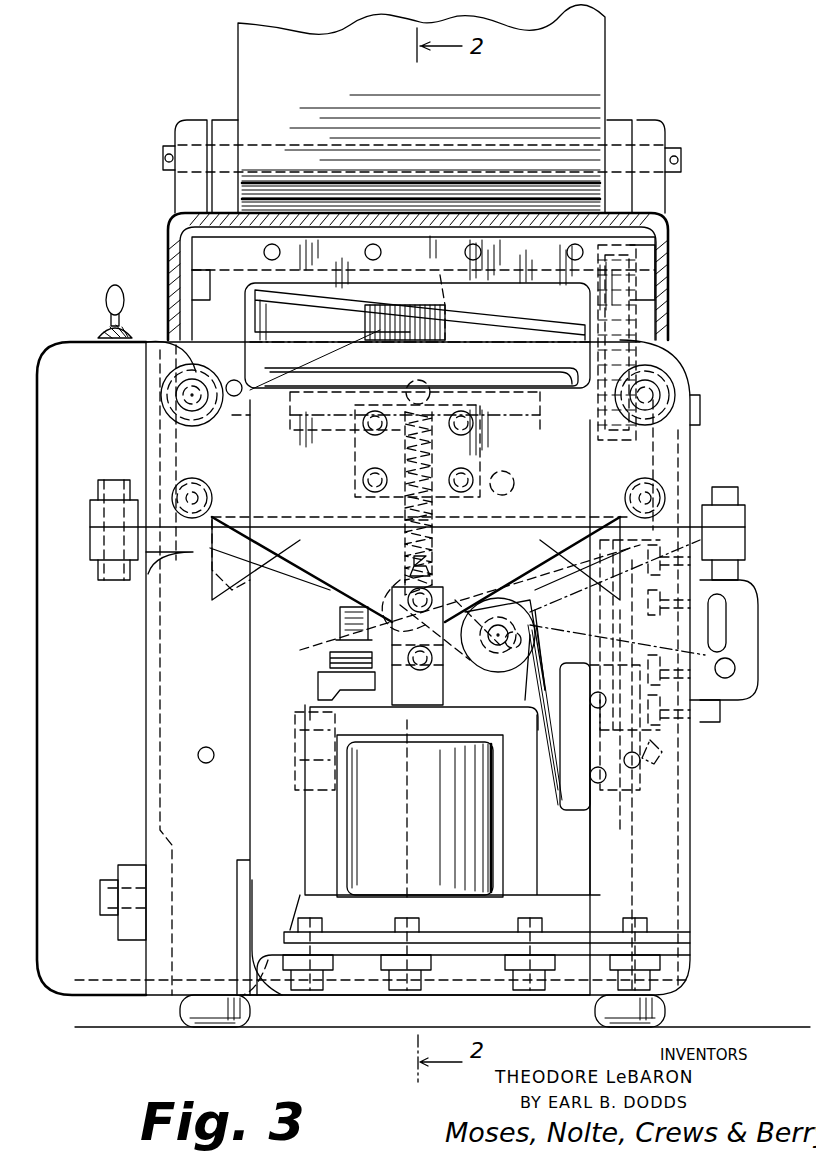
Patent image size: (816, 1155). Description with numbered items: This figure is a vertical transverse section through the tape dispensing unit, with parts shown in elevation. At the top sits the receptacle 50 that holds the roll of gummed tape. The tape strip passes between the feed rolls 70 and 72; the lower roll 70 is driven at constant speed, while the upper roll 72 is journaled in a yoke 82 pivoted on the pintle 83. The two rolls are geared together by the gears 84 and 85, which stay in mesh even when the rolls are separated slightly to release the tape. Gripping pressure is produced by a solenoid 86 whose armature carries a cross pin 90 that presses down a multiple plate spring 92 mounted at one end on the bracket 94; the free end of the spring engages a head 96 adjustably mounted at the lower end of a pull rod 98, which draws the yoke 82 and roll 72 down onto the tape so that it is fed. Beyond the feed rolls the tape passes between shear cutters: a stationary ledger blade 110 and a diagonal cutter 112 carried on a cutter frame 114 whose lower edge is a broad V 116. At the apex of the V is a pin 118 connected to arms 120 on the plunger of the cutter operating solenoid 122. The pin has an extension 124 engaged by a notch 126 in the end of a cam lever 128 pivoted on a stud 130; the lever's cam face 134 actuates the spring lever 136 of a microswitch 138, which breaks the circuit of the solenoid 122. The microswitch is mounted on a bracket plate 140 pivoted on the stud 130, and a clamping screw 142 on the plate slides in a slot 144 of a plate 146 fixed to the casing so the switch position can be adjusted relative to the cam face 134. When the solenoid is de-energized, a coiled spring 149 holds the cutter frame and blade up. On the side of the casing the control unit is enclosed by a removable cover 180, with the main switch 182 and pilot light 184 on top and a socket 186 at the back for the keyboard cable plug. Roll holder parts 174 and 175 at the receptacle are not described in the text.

The receptacle 50 is at (606, 76).
The lower feed roll 70 is at (380, 342).
The upper feed roll 72 is at (440, 315).
The yoke 82 is at (670, 221).
The pintle 83 is at (190, 292).
The gear 84 is at (660, 245).
The gear 85 is at (600, 488).
The solenoid 86 is at (570, 896).
The cross pin 90 is at (503, 644).
The multiple plate spring 92 is at (330, 660).
The bracket 94 is at (320, 690).
The head 96 is at (626, 683).
The pull rod 98 is at (600, 595).
The ledger blade 110 is at (292, 370).
The diagonal cutter 112 is at (405, 335).
The cutter frame 114 is at (575, 370).
The broad V 116 is at (246, 586).
The pin 118 is at (447, 595).
The arms 120 is at (445, 694).
The cutter operating solenoid 122 is at (395, 822).
The extension 124 is at (437, 498).
The notch 126 is at (406, 607).
The cam lever 128 is at (440, 618).
The stud 130 is at (488, 608).
The cam face 134 is at (530, 626).
The spring lever 136 is at (543, 715).
The microswitch 138 is at (578, 812).
The bracket plate 140 is at (520, 684).
The clamping screw 142 is at (736, 668).
The slot 144 is at (708, 608).
The plate 146 is at (748, 632).
The coiled spring 149 is at (405, 520).
The roll holder 174 is at (224, 124).
The roll pin 175 is at (163, 158).
The removable cover 180 is at (38, 712).
The main switch 182 is at (108, 301).
The pilot light 184 is at (98, 334).
The socket 186 is at (407, 578).